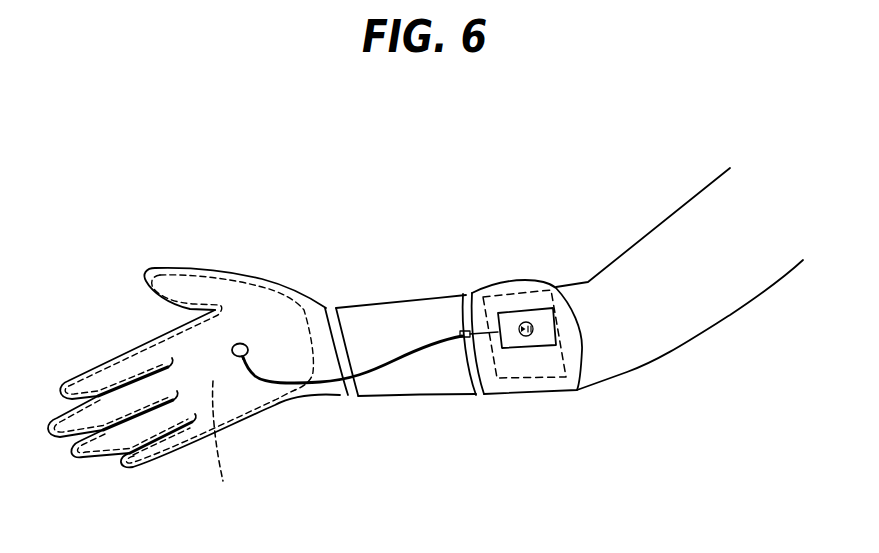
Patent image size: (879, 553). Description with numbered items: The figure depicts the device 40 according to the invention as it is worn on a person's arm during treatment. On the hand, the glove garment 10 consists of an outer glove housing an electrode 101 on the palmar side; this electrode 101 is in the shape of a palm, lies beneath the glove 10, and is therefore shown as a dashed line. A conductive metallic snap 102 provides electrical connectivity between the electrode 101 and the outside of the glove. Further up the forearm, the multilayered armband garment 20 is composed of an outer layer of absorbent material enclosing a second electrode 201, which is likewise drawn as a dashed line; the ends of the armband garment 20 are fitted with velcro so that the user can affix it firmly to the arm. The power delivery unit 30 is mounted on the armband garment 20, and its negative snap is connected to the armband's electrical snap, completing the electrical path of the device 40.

The garment 10 is at (279, 287).
The electrode 101 is at (220, 446).
The conductive metallic snap 102 is at (232, 348).
The multilayered armband garment 20 is at (568, 395).
The electrode 201 is at (521, 308).
The power delivery unit 30 is at (520, 352).
The device 40 is at (393, 440).